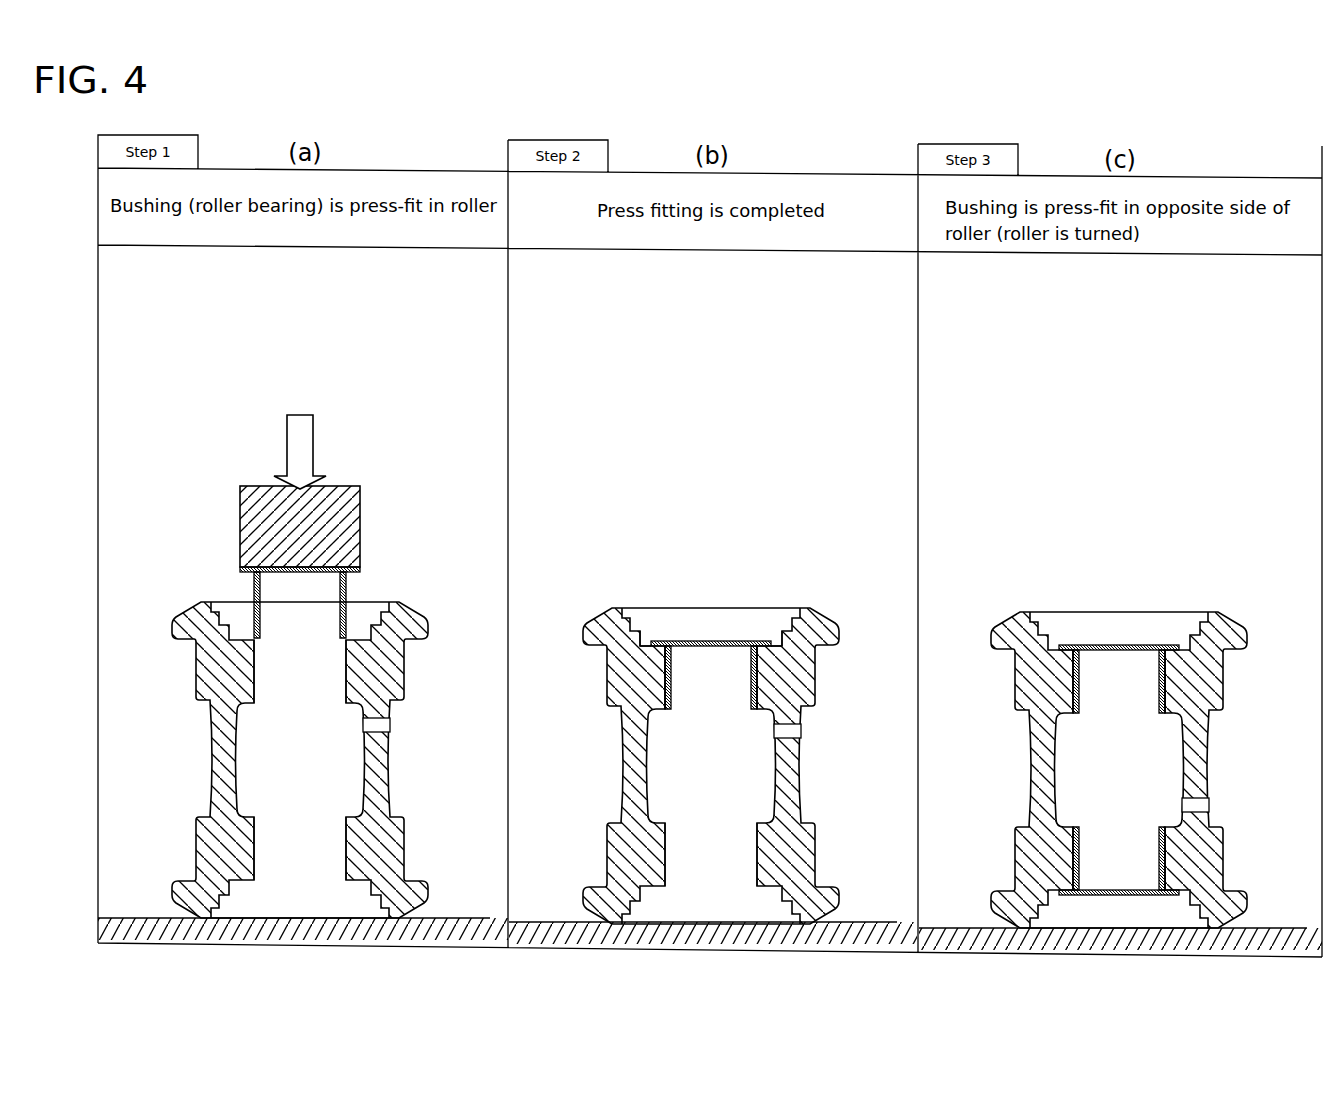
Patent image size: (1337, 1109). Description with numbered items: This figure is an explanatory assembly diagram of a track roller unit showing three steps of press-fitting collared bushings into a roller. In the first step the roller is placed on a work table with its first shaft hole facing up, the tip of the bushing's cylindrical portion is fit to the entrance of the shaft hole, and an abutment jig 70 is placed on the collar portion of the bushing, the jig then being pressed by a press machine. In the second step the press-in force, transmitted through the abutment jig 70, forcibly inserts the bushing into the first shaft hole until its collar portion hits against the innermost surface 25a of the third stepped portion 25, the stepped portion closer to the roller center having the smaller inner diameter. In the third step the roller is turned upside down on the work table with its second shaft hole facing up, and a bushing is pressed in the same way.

The third stepped portion 25 is at (777, 646).
The innermost surface 25a is at (753, 644).
The abutment jig 70 is at (361, 530).